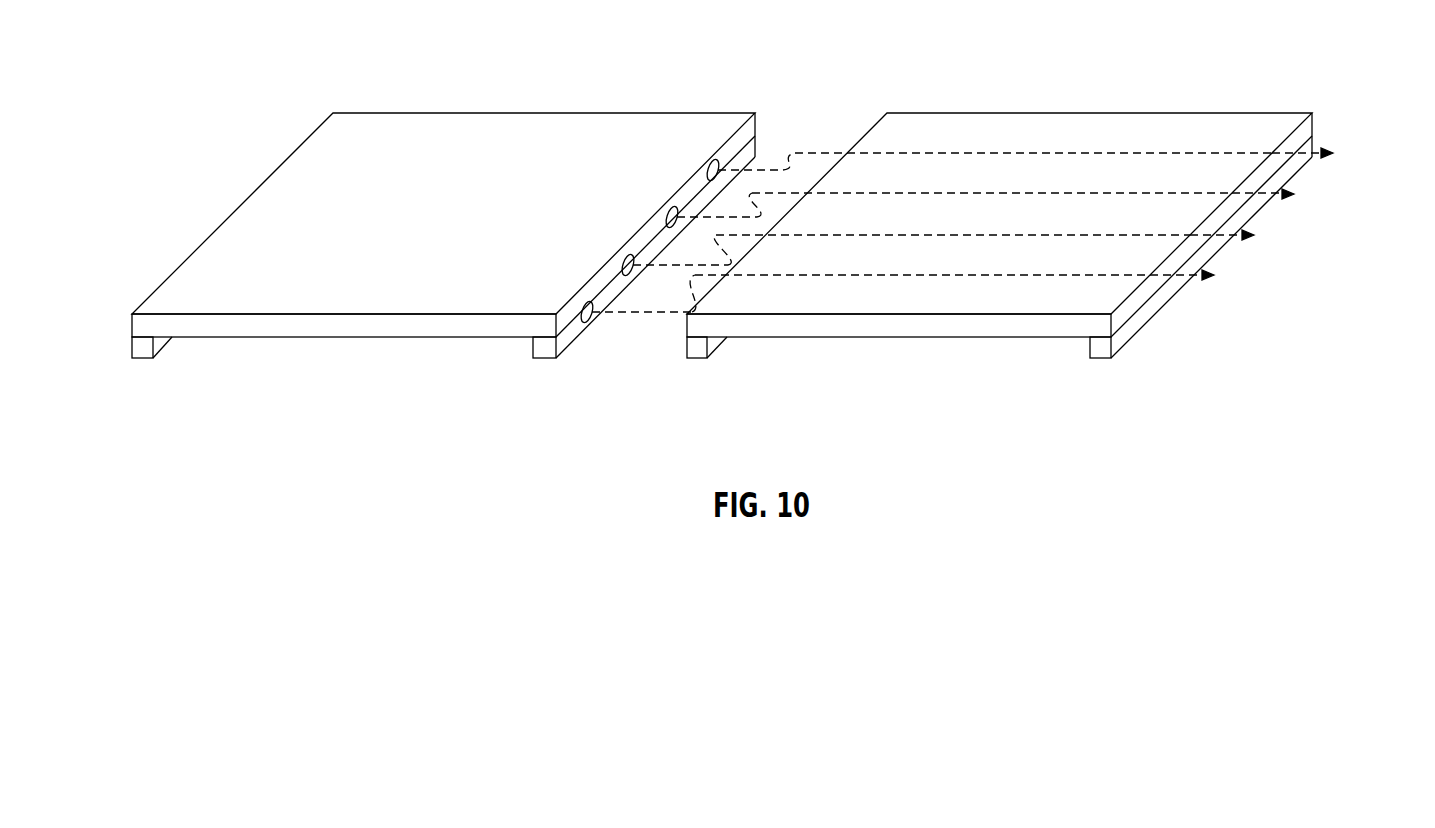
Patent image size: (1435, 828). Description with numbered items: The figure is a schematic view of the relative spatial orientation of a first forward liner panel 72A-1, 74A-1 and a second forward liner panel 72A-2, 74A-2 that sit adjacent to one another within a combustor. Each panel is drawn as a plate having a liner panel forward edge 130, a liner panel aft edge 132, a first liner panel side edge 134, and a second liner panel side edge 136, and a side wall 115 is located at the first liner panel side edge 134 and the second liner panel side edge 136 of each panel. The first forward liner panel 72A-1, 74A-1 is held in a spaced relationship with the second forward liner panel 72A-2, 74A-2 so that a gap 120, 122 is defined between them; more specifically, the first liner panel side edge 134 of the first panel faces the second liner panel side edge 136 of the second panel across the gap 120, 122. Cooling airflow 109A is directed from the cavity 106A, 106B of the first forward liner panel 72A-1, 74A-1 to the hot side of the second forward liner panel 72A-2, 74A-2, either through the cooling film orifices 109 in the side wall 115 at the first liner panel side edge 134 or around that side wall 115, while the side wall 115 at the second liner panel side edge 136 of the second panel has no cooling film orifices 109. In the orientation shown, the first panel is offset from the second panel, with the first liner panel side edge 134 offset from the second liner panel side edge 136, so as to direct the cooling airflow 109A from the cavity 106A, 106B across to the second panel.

The first forward liner panel 72A-1 is at (443, 201).
The first forward liner panel 74A-1 is at (441, 165).
The second forward liner panel 72A-2 is at (999, 201).
The second forward liner panel 74A-2 is at (1176, 80).
The cavity 106A is at (744, 229).
The cavity 106B is at (744, 229).
The cooling film orifices 109 is at (592, 320).
The cooling airflow 109A is at (1325, 150).
The side wall 115 is at (744, 223).
The gap 120 is at (988, 223).
The gap 122 is at (988, 223).
The liner panel forward edge 130 is at (744, 223).
The liner panel aft edge 132 is at (744, 223).
The first liner panel side edge 134 is at (744, 223).
The second liner panel side edge 136 is at (744, 223).